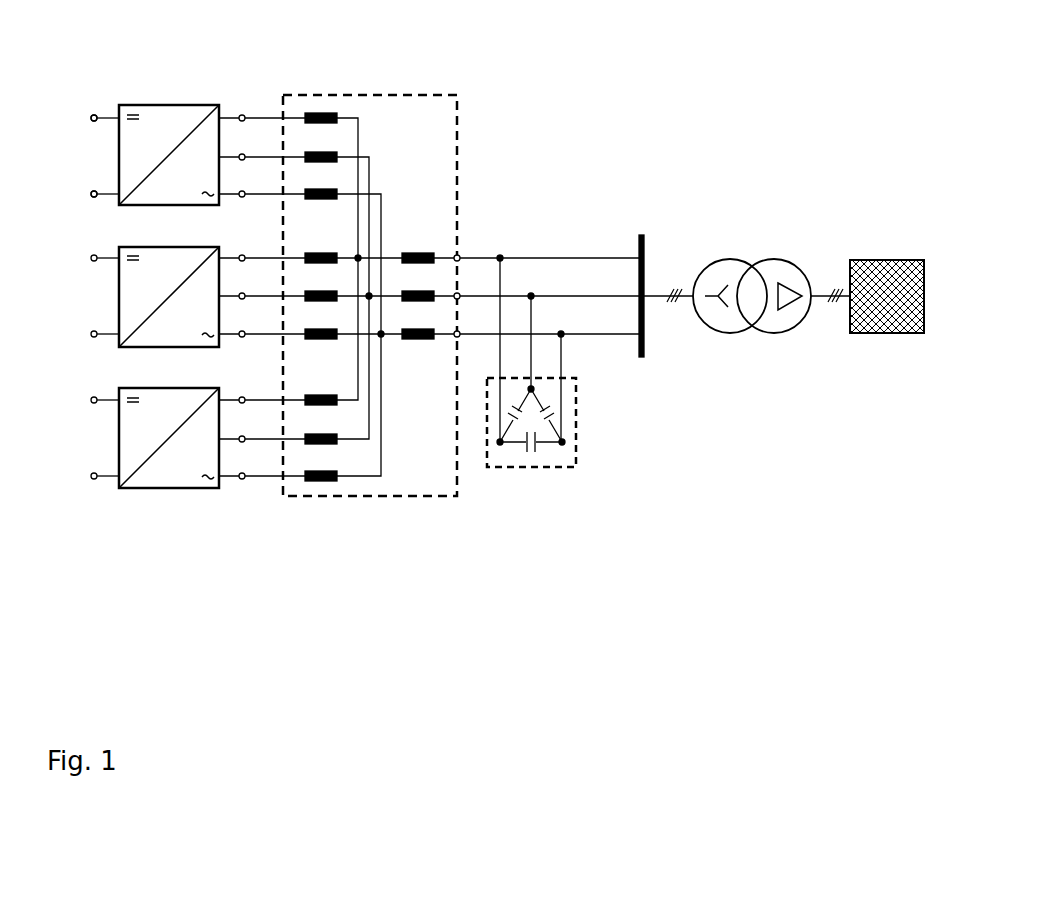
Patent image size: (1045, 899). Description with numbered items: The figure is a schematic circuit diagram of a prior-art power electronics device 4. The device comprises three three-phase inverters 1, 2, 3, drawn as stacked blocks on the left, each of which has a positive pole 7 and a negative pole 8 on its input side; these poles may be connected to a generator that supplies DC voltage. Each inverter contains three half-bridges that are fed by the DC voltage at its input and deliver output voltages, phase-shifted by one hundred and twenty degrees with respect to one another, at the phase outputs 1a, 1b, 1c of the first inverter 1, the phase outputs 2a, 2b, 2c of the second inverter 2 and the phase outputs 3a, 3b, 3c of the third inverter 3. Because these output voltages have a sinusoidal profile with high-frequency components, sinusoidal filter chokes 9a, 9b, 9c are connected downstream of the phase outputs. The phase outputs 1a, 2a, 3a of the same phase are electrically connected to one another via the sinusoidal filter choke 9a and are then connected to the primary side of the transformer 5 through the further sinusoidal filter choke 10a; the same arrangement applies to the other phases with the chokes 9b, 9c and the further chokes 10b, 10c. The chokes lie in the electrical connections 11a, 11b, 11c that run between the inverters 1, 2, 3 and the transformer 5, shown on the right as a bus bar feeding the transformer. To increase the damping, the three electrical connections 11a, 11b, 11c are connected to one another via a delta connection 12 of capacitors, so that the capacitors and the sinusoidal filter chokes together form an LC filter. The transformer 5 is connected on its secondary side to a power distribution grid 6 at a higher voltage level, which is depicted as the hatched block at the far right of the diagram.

The three-phase inverter 1 is at (155, 142).
The three-phase inverter 2 is at (155, 285).
The three-phase inverter 3 is at (155, 426).
The power electronics device 4 is at (671, 81).
The transformer 5 is at (762, 251).
The power distribution grid 6 is at (888, 262).
The positive pole 7 is at (92, 116).
The negative pole 8 is at (92, 193).
The phase output 1a is at (220, 118).
The phase output 1b is at (220, 157).
The phase output 1c is at (220, 194).
The phase output 2a is at (219, 258).
The phase output 2b is at (219, 296).
The phase output 2c is at (219, 334).
The phase output 3a is at (219, 400).
The phase output 3b is at (219, 439).
The phase output 3c is at (219, 476).
The sinusoidal filter choke 9a is at (316, 115).
The sinusoidal filter choke 9b is at (328, 154).
The sinusoidal filter choke 9c is at (333, 189).
The further sinusoidal filter choke 10a is at (415, 254).
The further sinusoidal filter choke 10b is at (421, 292).
The further sinusoidal filter choke 10c is at (415, 340).
The electrical connection 11a is at (596, 257).
The electrical connection 11b is at (572, 295).
The electrical connection 11c is at (597, 336).
The delta connection of capacitors 12 is at (578, 422).